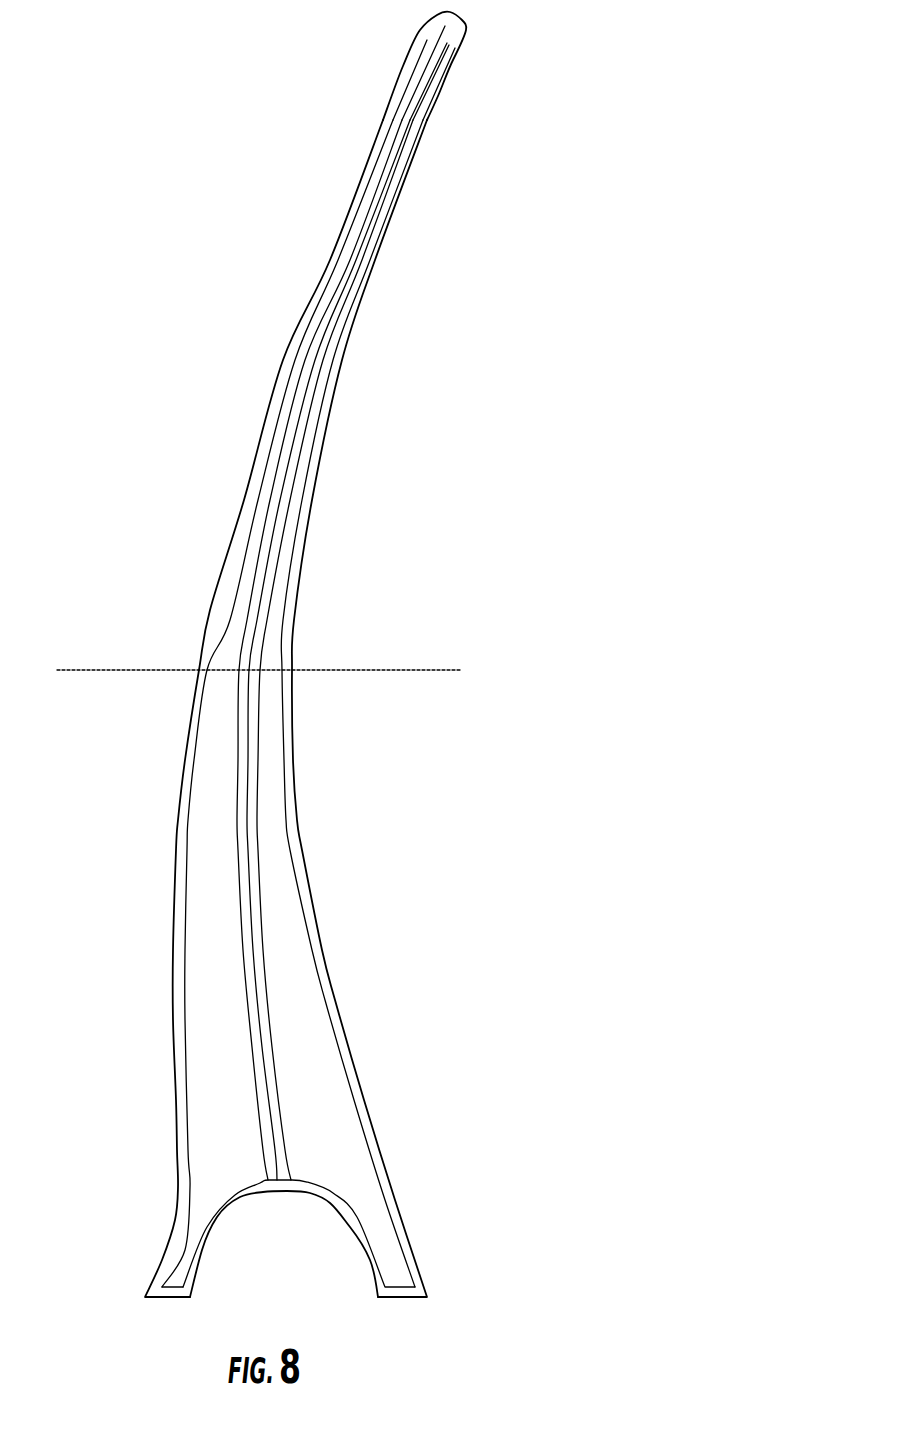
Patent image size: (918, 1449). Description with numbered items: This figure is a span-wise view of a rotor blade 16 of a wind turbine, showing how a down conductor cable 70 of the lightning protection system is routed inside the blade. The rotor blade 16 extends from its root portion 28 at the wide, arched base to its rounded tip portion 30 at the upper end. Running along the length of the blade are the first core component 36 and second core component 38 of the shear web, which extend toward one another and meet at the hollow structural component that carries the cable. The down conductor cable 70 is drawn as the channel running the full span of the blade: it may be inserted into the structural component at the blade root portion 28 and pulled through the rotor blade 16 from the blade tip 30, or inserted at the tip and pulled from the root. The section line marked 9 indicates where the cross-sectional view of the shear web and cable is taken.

The rotor blade 16 is at (438, 467).
The tip portion 30 is at (452, 14).
The first core component 36 is at (197, 1032).
The down conductor cable 70 is at (263, 1047).
The second core component 38 is at (328, 1123).
The root portion 28 is at (158, 1273).
The section line 9- 9 is at (97, 672).